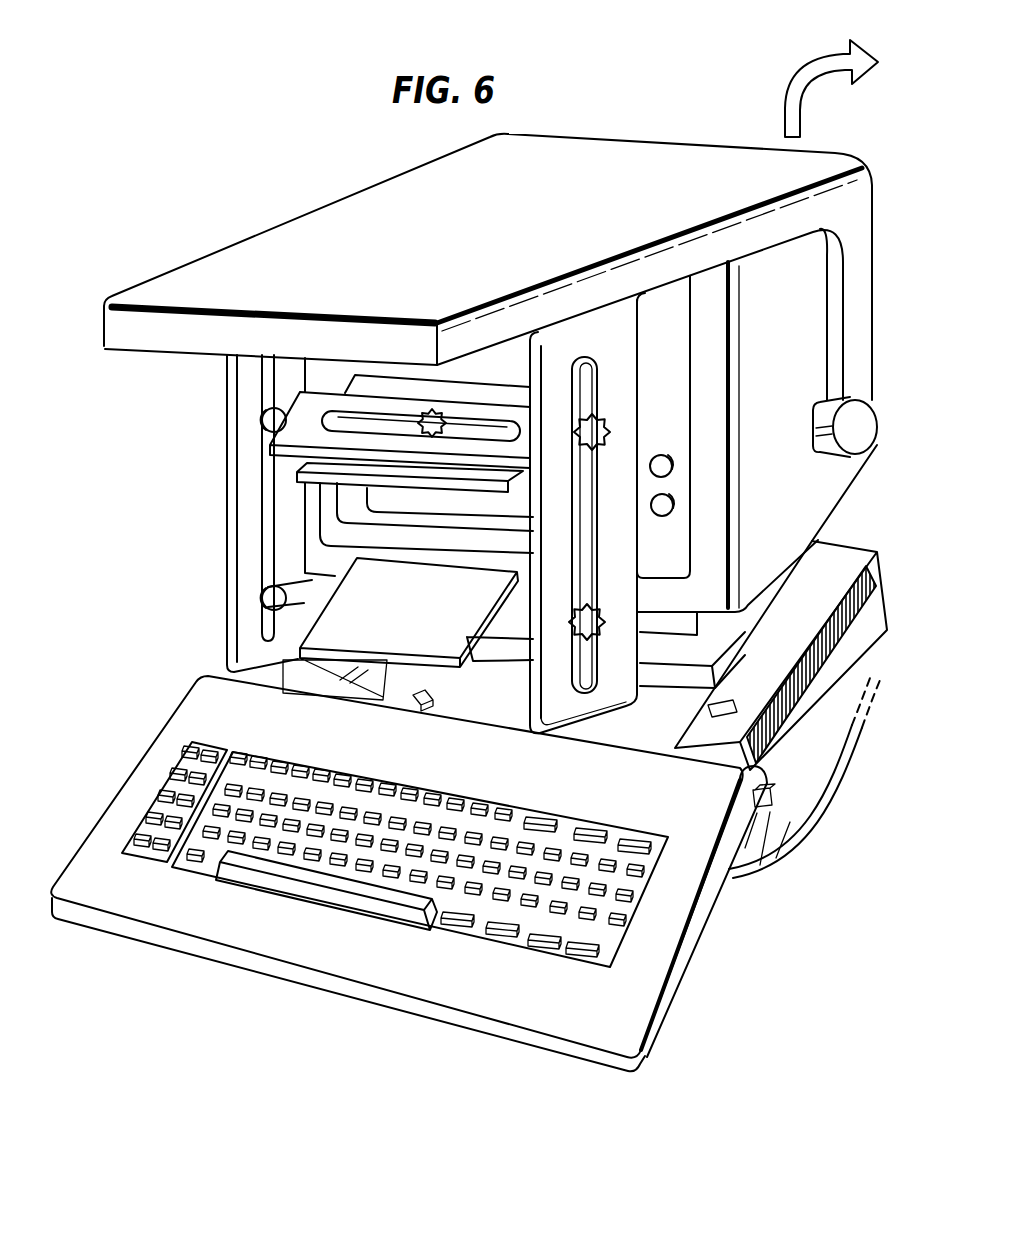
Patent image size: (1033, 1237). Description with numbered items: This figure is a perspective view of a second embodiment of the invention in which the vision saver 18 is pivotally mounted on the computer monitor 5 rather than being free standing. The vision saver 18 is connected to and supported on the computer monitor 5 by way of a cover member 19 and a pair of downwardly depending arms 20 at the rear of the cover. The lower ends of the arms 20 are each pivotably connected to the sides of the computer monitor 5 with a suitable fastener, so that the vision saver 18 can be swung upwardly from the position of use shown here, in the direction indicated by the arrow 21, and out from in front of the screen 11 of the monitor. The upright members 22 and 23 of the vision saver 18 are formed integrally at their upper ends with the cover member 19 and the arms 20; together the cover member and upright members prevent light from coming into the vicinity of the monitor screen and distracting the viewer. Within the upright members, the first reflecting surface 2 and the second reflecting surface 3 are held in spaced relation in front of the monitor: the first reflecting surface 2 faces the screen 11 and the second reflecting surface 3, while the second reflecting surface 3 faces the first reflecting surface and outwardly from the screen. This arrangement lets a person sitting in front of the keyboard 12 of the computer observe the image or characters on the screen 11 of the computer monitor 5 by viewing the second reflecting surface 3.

The cover member 19 is at (568, 143).
The arrow 21 is at (786, 105).
The downwardly depending arms 20 is at (850, 335).
The upright member 23 is at (628, 553).
The computer monitor 5 is at (833, 490).
The vision saver 18 is at (168, 477).
The upright member 22 is at (237, 428).
The first reflecting surface 2 is at (440, 490).
The screen 11 is at (517, 513).
The second reflecting surface 3 is at (450, 650).
The keyboard 12 is at (647, 1002).